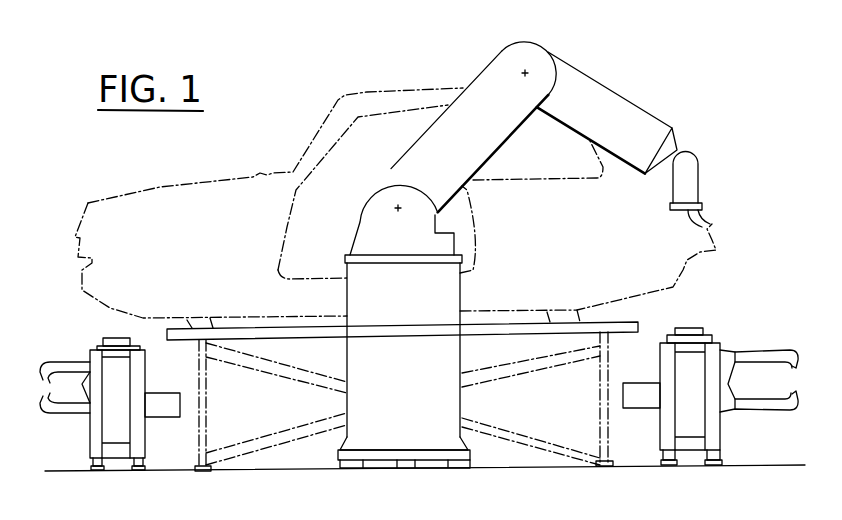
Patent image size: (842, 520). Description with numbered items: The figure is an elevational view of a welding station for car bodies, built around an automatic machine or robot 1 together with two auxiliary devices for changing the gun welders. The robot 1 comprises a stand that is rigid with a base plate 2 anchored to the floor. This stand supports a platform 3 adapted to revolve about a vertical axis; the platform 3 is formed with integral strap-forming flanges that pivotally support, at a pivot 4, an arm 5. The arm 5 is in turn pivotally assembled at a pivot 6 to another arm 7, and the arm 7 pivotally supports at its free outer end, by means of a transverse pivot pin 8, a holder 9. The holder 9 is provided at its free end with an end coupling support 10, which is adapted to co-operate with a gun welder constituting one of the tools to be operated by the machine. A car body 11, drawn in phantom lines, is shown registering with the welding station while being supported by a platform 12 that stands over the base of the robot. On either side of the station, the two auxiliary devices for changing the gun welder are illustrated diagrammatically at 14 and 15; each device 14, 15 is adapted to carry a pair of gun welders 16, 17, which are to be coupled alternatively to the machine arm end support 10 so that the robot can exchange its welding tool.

The automatic machine or robot 1 is at (462, 301).
The base plate 2 is at (344, 441).
The platform 3 is at (347, 259).
The pivot of arm 4 is at (396, 207).
The arm 5 is at (492, 88).
The pivot between arms 6 is at (534, 65).
The arm 7 is at (617, 109).
The transverse pivot pin 8 is at (685, 167).
The holder 9 is at (690, 185).
The end coupling support 10 is at (708, 223).
The car body 11 is at (176, 184).
The platform 12 is at (644, 318).
The auxiliary device for changing the gun welder 14 is at (146, 374).
The auxiliary device for changing the gun welder 15 is at (711, 351).
The gun welder 16 is at (82, 375).
The gun welder 17 is at (733, 387).